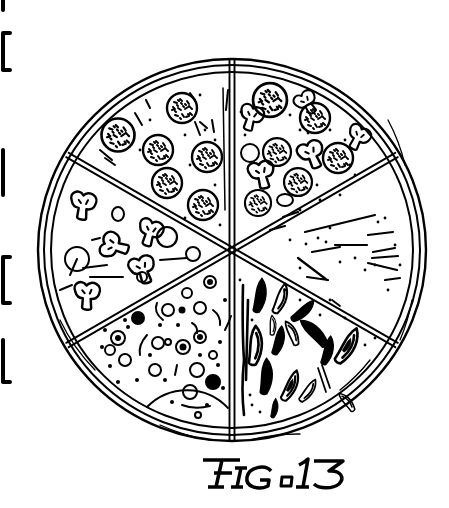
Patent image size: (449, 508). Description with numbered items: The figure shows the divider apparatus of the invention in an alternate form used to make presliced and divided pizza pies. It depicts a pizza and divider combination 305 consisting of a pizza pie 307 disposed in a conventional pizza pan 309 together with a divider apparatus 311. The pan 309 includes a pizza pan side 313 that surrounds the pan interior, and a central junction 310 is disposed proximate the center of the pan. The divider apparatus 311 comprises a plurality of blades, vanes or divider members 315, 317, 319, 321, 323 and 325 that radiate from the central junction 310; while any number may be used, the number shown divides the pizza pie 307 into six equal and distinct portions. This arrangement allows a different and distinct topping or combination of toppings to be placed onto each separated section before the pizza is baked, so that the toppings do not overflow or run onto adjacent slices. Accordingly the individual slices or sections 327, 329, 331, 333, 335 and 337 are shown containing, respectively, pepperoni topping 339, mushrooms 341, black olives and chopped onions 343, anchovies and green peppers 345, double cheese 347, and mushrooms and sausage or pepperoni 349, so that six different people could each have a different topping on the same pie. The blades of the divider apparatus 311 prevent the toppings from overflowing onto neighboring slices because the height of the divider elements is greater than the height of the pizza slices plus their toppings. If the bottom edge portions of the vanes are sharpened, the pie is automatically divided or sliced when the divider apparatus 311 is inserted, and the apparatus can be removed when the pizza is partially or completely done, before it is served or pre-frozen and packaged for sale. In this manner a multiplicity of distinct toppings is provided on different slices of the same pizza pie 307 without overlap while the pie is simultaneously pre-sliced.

The pizza and divider combination 305 is at (215, 45).
The pizza pie 307 is at (215, 95).
The pizza pan 309 is at (295, 60).
The central junction 310 is at (238, 250).
The divider apparatus 311 is at (84, 181).
The pizza pan side 313 is at (407, 150).
The divider member 315 is at (242, 82).
The divider member 317 is at (152, 188).
The divider member 319 is at (72, 340).
The divider member 321 is at (200, 430).
The divider member 323 is at (348, 320).
The divider member 325 is at (312, 228).
The slice 327 is at (150, 105).
The slice 329 is at (98, 232).
The slice 331 is at (106, 355).
The slice 333 is at (292, 428).
The slice 335 is at (420, 322).
The slice 337 is at (299, 83).
The pepperoni topping 339 is at (159, 135).
The mushrooms 341 is at (75, 300).
The black olives and chopped onions 343 is at (108, 358).
The anchovies and green peppers 345 is at (344, 401).
The double cheese 347 is at (378, 368).
The mushrooms and sausage or pepperoni 349 is at (324, 153).